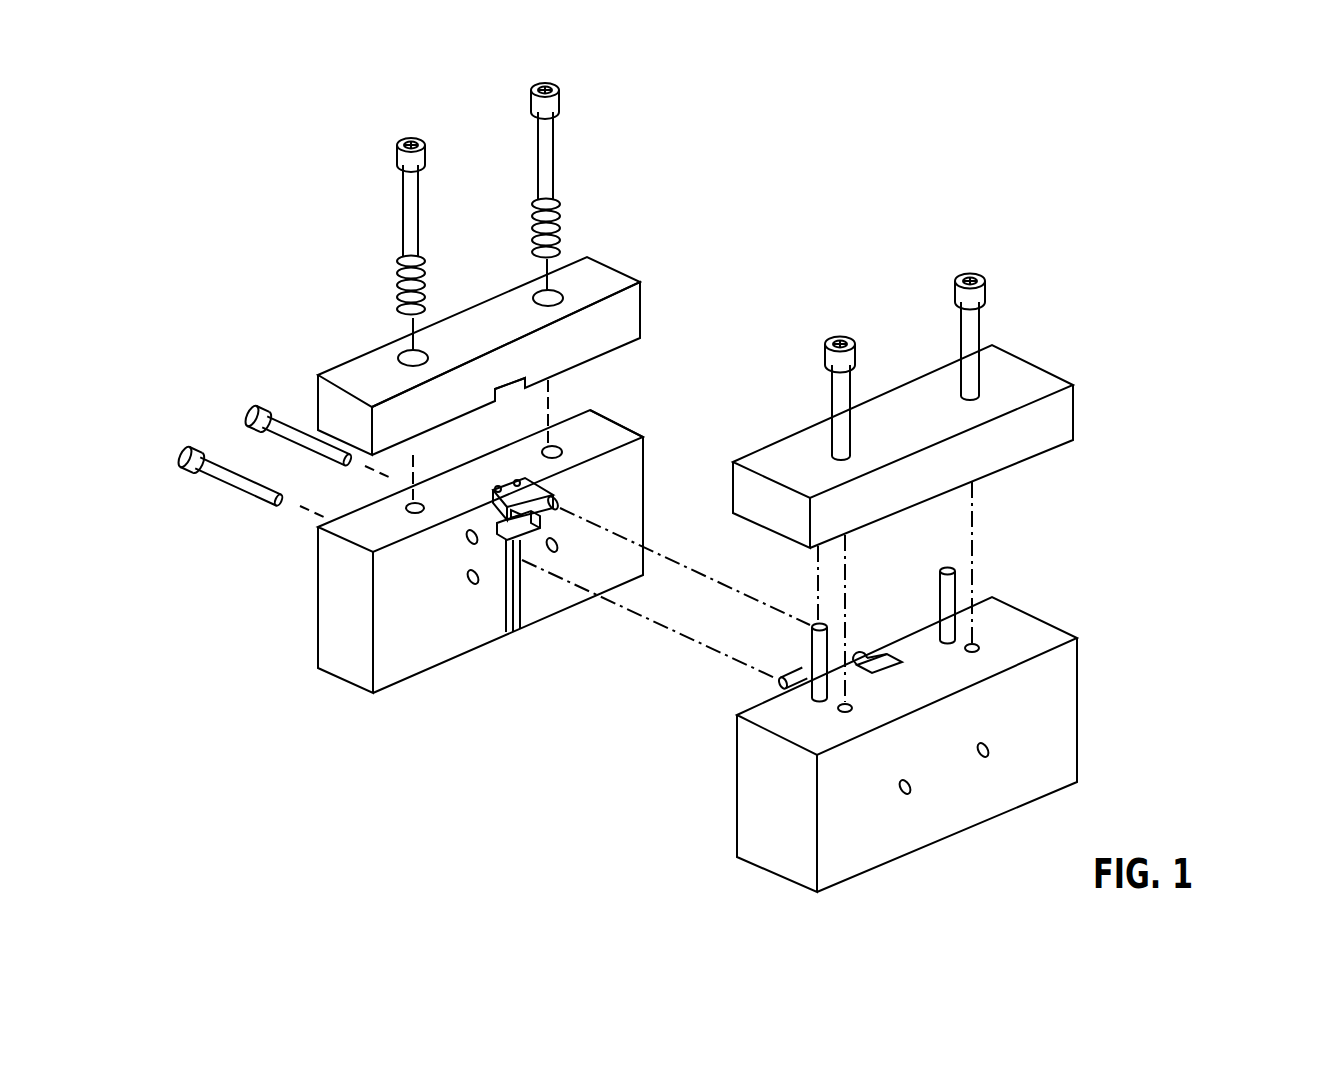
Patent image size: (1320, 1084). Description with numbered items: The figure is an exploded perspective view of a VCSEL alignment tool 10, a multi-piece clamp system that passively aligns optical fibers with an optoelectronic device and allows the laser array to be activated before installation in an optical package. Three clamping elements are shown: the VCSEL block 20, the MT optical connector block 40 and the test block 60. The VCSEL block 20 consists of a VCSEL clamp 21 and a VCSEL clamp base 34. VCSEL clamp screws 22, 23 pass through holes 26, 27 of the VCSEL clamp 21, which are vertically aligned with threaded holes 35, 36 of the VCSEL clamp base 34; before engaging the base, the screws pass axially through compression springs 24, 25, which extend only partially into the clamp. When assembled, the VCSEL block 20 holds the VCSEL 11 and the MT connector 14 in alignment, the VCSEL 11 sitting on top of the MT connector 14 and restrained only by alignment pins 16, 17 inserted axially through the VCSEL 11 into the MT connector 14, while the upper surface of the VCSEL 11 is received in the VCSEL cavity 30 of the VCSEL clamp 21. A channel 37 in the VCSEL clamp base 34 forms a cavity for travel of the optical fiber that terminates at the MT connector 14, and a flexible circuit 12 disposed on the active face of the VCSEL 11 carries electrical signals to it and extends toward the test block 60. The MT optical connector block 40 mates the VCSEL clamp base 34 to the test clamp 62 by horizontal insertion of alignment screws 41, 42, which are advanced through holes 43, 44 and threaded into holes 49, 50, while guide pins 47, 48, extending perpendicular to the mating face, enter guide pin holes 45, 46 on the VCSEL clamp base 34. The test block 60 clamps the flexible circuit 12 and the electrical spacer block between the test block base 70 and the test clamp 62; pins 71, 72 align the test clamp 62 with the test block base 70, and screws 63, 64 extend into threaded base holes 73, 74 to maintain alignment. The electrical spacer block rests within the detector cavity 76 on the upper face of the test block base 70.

The VCSEL alignment tool 10 is at (1190, 729).
The VCSEL 11 is at (510, 486).
The flexible circuit 12 is at (633, 423).
The MT connector 14 is at (500, 528).
The alignment pin 16 is at (495, 487).
The alignment pin 17 is at (519, 480).
The VCSEL block 20 is at (247, 579).
The VCSEL clamp 21 is at (318, 375).
The VCSEL clamp screw 22 is at (426, 148).
The VCSEL clamp screw 23 is at (560, 98).
The compression spring 24 is at (428, 262).
The compression spring 25 is at (560, 210).
The hole 26 is at (426, 357).
The hole 27 is at (563, 297).
The VCSEL cavity 30 is at (508, 383).
The VCSEL clamp base 34 is at (345, 688).
The threaded hole 35 is at (407, 512).
The threaded hole 36 is at (560, 452).
The channel 37 is at (513, 634).
The MT optical connector block 40 is at (590, 760).
The alignment screw 41 is at (181, 448).
The alignment screw 42 is at (248, 415).
The hole 43 is at (472, 585).
The hole 44 is at (558, 546).
The guide pin hole 45 is at (468, 544).
The guide pin hole 46 is at (558, 501).
The guide pin 47 is at (772, 683).
The guide pin 48 is at (860, 650).
The hole 49 is at (910, 791).
The hole 50 is at (988, 753).
The test block 60 is at (1128, 522).
The test clamp 62 is at (1073, 382).
The screw 63 is at (852, 342).
The screw 64 is at (981, 278).
The test block base 70 is at (1078, 641).
The pin 71 is at (811, 652).
The pin 72 is at (939, 582).
The threaded base hole 73 is at (838, 708).
The threaded base hole 74 is at (979, 648).
The detector cavity 76 is at (883, 658).